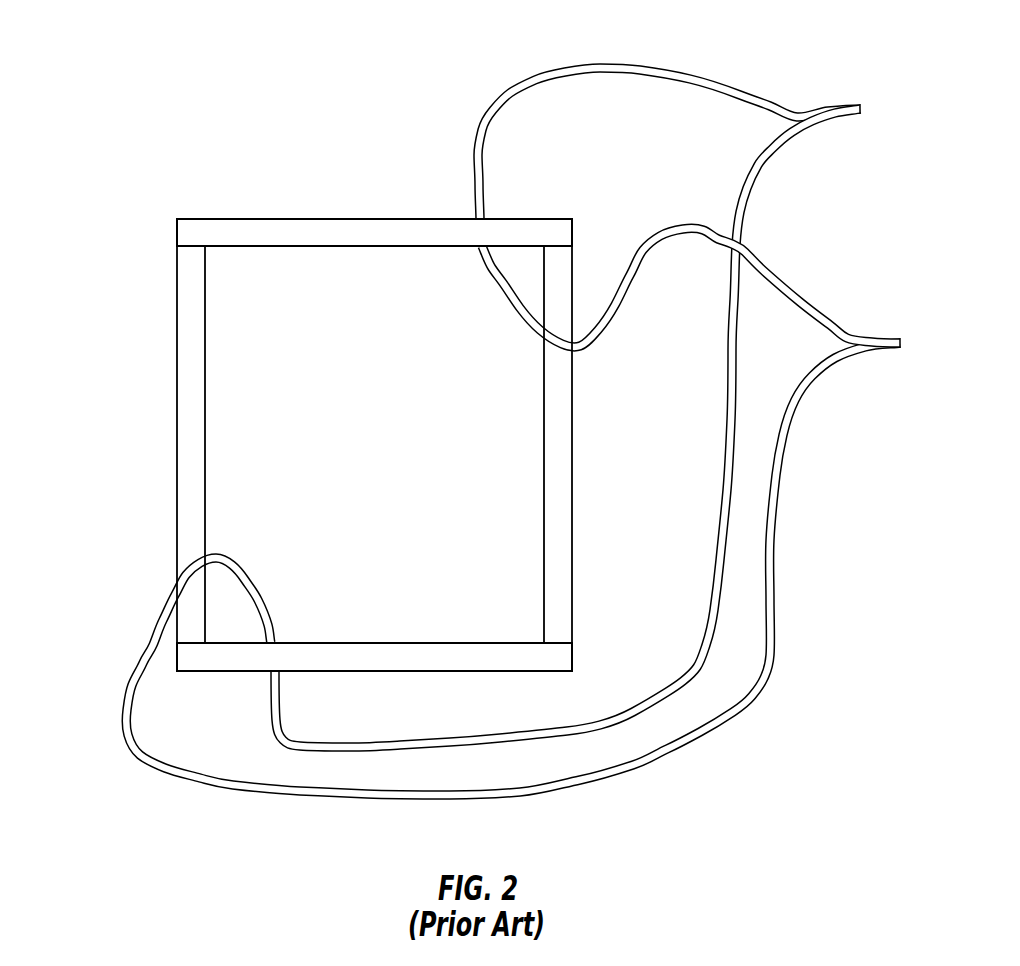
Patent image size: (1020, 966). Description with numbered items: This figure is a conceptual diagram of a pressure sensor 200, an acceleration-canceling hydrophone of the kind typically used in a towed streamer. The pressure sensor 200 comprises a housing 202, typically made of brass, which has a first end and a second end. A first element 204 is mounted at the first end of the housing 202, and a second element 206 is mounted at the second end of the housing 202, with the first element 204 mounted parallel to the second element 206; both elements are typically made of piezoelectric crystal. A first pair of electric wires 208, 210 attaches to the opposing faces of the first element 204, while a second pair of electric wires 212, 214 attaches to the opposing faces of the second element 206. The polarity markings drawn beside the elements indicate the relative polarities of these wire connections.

The pressure sensor 200 is at (206, 52).
The housing 202 is at (578, 530).
The first element 204 is at (246, 217).
The second element 206 is at (533, 672).
The electric wire 208 is at (599, 67).
The electric wire 210 is at (760, 256).
The electric wire 212 is at (118, 712).
The electric wire 214 is at (273, 693).